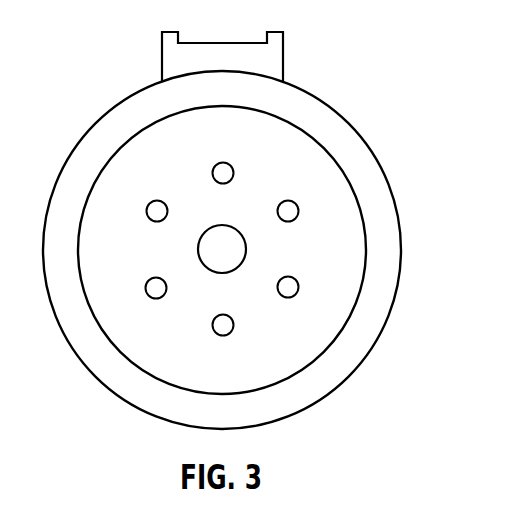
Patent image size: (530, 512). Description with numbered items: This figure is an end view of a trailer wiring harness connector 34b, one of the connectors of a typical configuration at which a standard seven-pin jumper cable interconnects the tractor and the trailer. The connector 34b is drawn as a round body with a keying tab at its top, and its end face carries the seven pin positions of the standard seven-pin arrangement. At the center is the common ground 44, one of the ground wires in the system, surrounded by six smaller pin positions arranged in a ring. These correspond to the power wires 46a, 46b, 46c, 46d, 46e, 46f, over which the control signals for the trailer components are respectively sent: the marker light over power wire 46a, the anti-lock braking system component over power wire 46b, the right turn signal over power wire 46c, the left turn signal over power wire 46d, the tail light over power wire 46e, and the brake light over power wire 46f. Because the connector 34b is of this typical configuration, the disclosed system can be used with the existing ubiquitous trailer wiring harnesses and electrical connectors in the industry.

The connector 34b is at (119, 80).
The common ground 44 is at (225, 274).
The power wire 46a is at (220, 163).
The power wire 46b is at (299, 210).
The power wire 46c is at (283, 277).
The power wire 46d is at (225, 336).
The power wire 46e is at (157, 299).
The power wire 46f is at (158, 200).